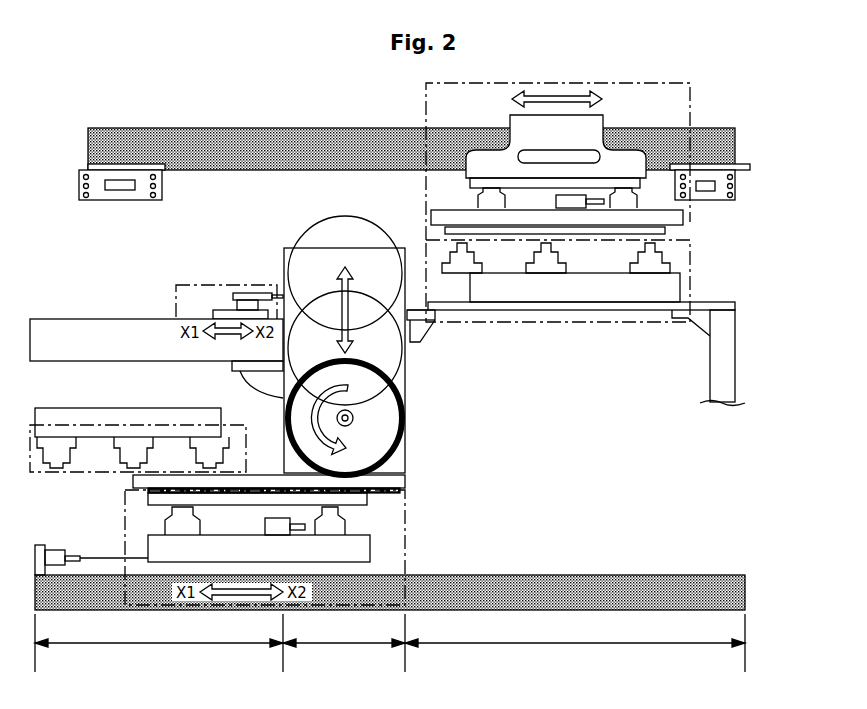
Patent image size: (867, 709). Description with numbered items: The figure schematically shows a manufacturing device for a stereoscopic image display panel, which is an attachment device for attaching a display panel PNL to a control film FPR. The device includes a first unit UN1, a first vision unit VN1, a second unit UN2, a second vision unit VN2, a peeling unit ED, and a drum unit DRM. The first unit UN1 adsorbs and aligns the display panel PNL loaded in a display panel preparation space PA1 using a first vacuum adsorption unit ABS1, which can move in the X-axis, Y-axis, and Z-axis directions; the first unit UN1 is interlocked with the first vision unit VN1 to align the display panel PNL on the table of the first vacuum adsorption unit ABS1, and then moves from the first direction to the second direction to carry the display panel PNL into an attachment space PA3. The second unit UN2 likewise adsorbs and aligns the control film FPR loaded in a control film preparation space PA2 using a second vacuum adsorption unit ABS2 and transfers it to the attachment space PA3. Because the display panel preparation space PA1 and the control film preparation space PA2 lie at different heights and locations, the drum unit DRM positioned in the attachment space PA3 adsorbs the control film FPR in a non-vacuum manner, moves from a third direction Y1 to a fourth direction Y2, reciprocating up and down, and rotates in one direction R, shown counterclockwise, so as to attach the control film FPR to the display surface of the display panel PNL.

The second unit UN2 is at (690, 112).
The second vacuum adsorption unit ABS2 is at (668, 215).
The control film FPR is at (665, 231).
The second vision unit VN2 is at (690, 280).
The peeling unit ED is at (228, 285).
The first vision unit VN1 is at (138, 425).
The drum unit DRM is at (388, 415).
The display panel PNL is at (395, 481).
The first vacuum adsorption unit ABS1 is at (368, 497).
The first unit UN1 is at (405, 540).
The display panel preparation space PA1 is at (159, 643).
The control film preparation space PA2 is at (575, 643).
The attachment space PA3 is at (344, 643).
The third direction Y1 is at (331, 310).
The fourth direction Y2 is at (319, 352).
The one direction R is at (334, 423).